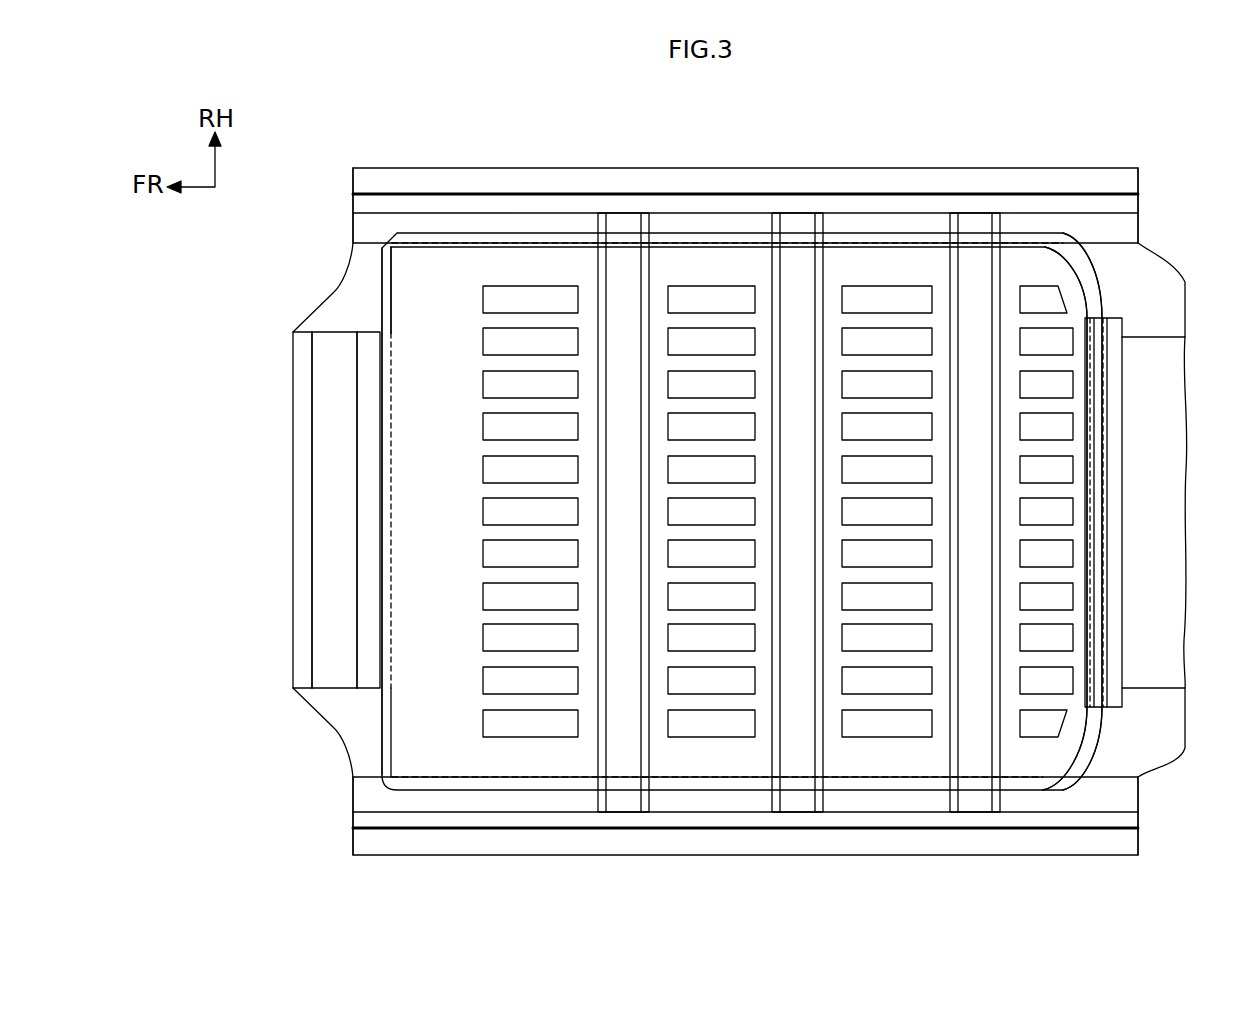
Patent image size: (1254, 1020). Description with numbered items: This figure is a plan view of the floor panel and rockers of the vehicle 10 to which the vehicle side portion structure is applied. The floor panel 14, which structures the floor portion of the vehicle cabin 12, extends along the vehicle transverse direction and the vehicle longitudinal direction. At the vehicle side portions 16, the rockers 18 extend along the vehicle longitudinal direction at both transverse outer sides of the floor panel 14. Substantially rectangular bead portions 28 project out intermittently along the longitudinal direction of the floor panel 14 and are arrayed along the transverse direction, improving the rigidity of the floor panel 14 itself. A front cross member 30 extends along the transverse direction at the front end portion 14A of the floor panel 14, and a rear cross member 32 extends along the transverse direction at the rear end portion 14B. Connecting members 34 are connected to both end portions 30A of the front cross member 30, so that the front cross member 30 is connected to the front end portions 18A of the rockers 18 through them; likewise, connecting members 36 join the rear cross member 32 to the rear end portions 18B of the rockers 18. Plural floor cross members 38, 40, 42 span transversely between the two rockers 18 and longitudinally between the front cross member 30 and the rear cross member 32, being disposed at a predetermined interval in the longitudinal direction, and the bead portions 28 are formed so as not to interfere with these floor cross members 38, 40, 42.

The vehicle 10 is at (1190, 152).
The vehicle cabin 12 is at (437, 513).
The floor panel 14 is at (862, 265).
The front end portion 14A is at (413, 287).
The rear end portion 14B is at (1068, 297).
The vehicle side portions 16 is at (637, 162).
The rockers 18 is at (780, 172).
The front end portions 18A is at (365, 178).
The rear end portions 18B is at (1119, 181).
The bead portions 28 is at (553, 384).
The front cross member 30 is at (330, 546).
The end portions 30A is at (322, 352).
The rear cross member 32 is at (1112, 345).
The connecting members 34 is at (325, 308).
The connecting members 36 is at (1157, 285).
The floor cross member 38 is at (622, 763).
The floor cross member 40 is at (797, 762).
The floor cross member 42 is at (975, 763).